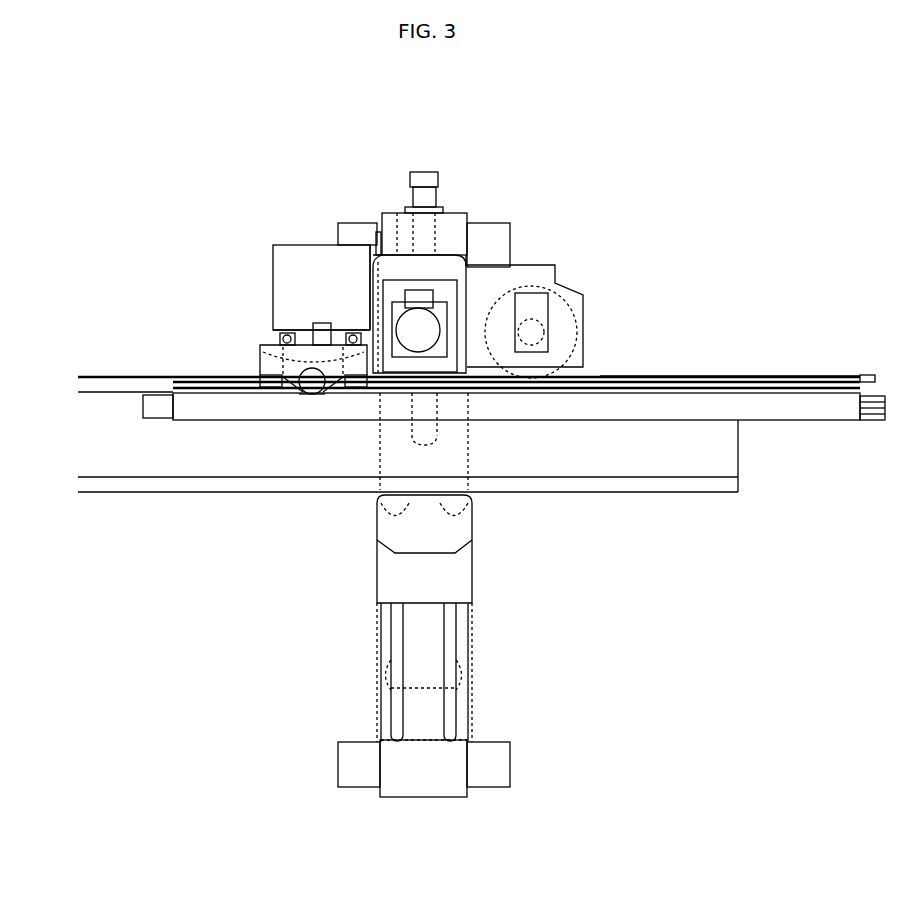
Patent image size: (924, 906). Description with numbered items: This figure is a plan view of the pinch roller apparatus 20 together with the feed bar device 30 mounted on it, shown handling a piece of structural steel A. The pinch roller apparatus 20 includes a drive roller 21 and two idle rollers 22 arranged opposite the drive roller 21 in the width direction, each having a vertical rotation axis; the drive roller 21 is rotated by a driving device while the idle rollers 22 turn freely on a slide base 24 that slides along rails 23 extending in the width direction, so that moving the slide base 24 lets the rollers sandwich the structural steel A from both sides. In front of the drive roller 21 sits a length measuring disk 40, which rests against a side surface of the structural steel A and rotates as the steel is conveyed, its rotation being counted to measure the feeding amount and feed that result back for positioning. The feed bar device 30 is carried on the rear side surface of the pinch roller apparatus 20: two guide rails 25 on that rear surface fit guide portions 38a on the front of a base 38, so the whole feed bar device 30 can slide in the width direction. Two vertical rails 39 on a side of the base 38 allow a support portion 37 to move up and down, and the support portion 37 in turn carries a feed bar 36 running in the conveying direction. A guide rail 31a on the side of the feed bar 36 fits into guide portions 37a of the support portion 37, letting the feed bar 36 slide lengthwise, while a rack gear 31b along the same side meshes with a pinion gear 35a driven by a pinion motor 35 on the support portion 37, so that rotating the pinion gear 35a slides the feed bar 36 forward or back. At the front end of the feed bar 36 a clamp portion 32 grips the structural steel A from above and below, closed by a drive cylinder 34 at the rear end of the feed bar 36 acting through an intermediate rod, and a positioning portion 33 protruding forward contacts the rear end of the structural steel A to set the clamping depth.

The pinch roller apparatus 20 is at (485, 222).
The drive roller 21 is at (458, 348).
The idle rollers 22 is at (378, 512).
The rails 23 is at (452, 613).
The slide base 24 is at (456, 568).
The guide rails 25 is at (377, 243).
The feed bar device 30 is at (305, 245).
The guide rail 31a is at (666, 376).
The rack gear 31b is at (745, 386).
The clamp portion 32 is at (866, 421).
The positioning portion 33 is at (870, 374).
The drive cylinder 34 is at (158, 410).
The pinion motor 35 is at (322, 395).
The pinion gear 35a is at (300, 396).
The feed bar 36 is at (806, 376).
The support portion 37 is at (262, 345).
The guide portions 37a is at (265, 392).
The base 38 is at (272, 268).
The guide portions 38a is at (376, 258).
The rails 39 is at (272, 354).
The length measuring disk 40 is at (586, 303).
The structural steel A is at (622, 462).